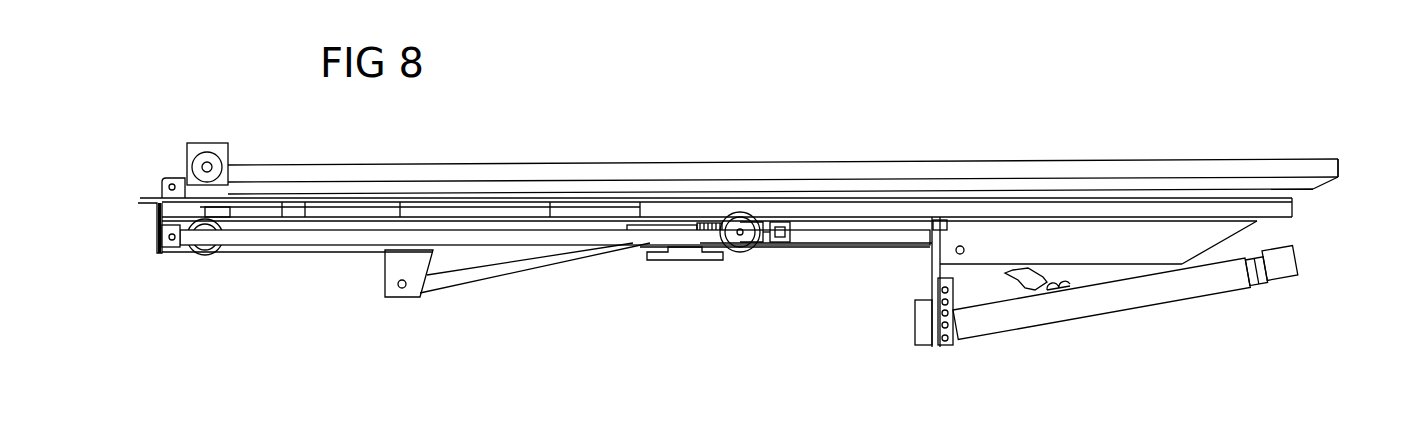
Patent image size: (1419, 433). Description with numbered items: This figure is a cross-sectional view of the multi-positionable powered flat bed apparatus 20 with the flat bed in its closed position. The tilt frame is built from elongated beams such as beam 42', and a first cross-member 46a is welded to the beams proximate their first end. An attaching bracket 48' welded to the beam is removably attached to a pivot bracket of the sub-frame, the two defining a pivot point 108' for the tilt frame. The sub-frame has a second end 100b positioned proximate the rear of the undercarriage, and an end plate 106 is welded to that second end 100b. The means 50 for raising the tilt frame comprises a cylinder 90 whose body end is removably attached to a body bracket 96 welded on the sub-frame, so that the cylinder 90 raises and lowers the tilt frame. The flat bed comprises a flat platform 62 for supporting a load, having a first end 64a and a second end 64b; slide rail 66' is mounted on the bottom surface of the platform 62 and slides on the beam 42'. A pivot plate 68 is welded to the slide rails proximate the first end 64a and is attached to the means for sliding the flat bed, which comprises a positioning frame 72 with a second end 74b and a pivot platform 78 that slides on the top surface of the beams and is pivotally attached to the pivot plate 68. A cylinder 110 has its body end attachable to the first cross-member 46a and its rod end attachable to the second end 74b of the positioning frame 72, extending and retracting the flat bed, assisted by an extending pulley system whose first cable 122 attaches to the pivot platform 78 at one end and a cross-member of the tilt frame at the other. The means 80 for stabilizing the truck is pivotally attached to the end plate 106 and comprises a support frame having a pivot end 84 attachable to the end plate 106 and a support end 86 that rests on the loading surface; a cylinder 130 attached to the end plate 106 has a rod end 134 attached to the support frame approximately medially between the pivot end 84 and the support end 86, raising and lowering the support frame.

The multi-positionable powered flat bed apparatus 20 is at (1207, 158).
The elongated beam 42' is at (716, 169).
The first cross-member 46a is at (138, 203).
The attaching bracket 48' is at (1154, 241).
The means for raising the tilt frame 50 is at (500, 277).
The flat platform 62 is at (1122, 160).
The first end of the platform 64a is at (185, 177).
The second end of the platform 64b is at (1340, 162).
The slide rail 66' is at (1362, 193).
The pivot plate 68 is at (165, 178).
The positioning frame 72 is at (768, 218).
The second end of the positioning frame 74b is at (778, 242).
The pivot platform 78 is at (285, 205).
The means for stabilizing the truck 80 is at (1082, 317).
The pivot end of the support frame 84 is at (955, 333).
The support end of the support frame 86 is at (1283, 270).
The cylinder 90 is at (540, 267).
The body bracket 96 is at (388, 298).
The second end of the sub-frame 100b is at (918, 232).
The end plate 106 is at (932, 347).
The pivot point 108' is at (933, 235).
The cylinder 110 is at (233, 247).
The first cable 122 is at (543, 213).
The cylinder 130 is at (1015, 283).
The rod end of the cylinder 134 is at (1073, 285).